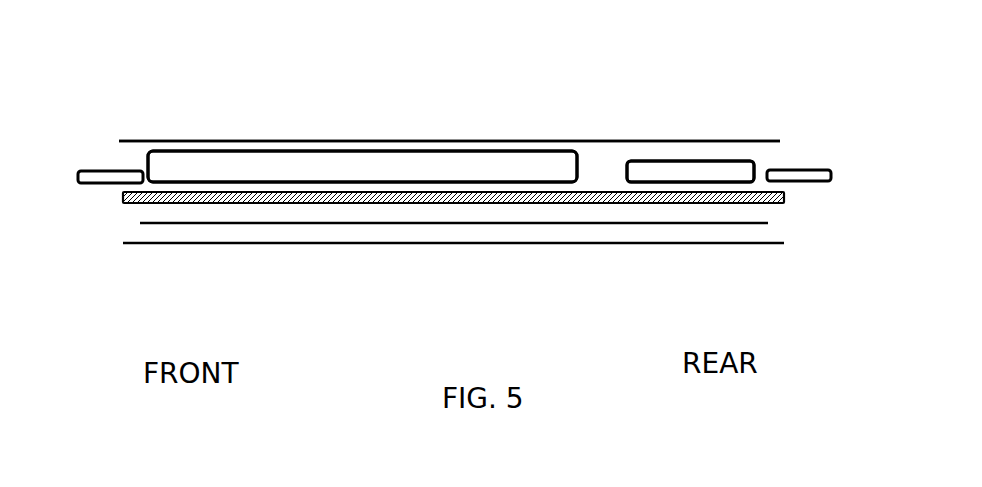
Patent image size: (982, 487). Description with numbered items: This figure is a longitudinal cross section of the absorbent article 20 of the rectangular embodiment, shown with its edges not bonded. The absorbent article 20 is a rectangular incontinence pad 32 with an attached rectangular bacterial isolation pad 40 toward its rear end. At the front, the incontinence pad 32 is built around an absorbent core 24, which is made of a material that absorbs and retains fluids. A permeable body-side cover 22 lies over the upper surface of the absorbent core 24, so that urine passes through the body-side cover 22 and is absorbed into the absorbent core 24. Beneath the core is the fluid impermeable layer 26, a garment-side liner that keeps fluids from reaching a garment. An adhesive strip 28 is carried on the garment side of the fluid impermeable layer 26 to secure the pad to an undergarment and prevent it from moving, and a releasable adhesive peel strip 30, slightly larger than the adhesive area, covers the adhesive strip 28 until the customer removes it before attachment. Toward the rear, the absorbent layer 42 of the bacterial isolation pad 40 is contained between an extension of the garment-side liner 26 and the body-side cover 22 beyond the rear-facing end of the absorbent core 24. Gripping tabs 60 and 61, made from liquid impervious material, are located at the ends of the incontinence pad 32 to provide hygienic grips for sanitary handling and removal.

The absorbent article 20 is at (174, 67).
The permeable body-side cover 22 is at (366, 133).
The absorbent core 24 is at (453, 160).
The fluid impermeable layer 26 is at (138, 203).
The adhesive strip 28 is at (768, 223).
The releasable adhesive peel strip 30 is at (251, 245).
The incontinence pad 32 is at (230, 117).
The bacterial isolation pad 40 is at (678, 117).
The absorbent layer 42 is at (732, 165).
The gripping tab 60 is at (800, 168).
The gripping tab 61 is at (110, 170).